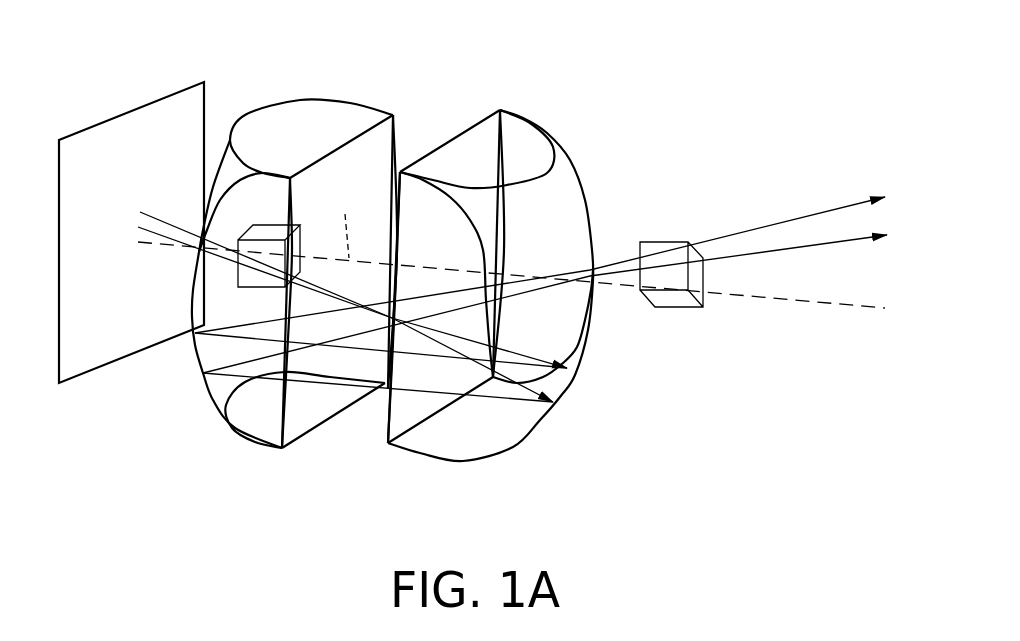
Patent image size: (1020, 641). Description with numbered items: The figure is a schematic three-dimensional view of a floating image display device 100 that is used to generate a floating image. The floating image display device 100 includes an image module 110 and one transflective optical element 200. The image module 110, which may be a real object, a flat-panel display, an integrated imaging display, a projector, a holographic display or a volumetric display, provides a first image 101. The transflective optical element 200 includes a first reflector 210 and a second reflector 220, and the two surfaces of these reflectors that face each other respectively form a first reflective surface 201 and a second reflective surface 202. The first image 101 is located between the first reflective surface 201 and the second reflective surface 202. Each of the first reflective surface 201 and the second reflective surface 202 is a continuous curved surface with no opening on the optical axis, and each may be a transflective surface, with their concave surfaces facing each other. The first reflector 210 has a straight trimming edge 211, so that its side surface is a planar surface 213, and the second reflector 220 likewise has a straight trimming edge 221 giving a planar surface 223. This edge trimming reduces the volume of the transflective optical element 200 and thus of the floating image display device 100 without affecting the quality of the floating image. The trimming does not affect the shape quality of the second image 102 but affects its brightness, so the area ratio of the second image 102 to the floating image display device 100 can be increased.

The floating image display device 100 is at (824, 508).
The first image 101 is at (258, 228).
The second image 102 is at (650, 243).
The image module 110 is at (107, 328).
The transflective optical element 200 is at (483, 86).
The first reflective surface 201 is at (303, 353).
The second reflective surface 202 is at (562, 365).
The first reflector 210 is at (265, 256).
The straight trimming edge 211 is at (266, 142).
The planar surface 213 is at (232, 308).
The second reflector 220 is at (509, 280).
The straight trimming edge 221 is at (440, 168).
The planar surface 223 is at (433, 372).